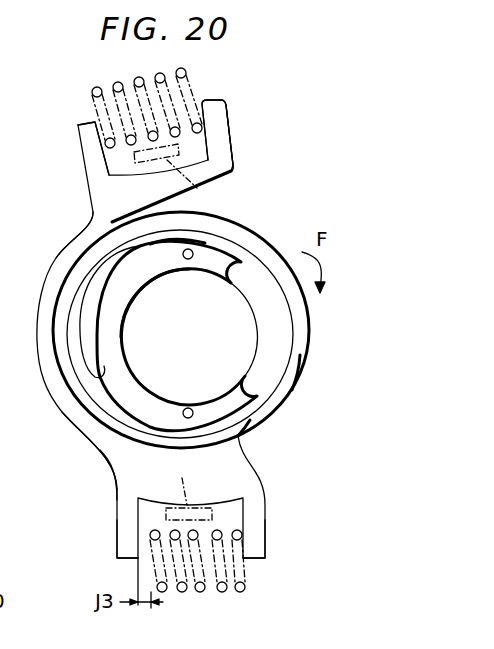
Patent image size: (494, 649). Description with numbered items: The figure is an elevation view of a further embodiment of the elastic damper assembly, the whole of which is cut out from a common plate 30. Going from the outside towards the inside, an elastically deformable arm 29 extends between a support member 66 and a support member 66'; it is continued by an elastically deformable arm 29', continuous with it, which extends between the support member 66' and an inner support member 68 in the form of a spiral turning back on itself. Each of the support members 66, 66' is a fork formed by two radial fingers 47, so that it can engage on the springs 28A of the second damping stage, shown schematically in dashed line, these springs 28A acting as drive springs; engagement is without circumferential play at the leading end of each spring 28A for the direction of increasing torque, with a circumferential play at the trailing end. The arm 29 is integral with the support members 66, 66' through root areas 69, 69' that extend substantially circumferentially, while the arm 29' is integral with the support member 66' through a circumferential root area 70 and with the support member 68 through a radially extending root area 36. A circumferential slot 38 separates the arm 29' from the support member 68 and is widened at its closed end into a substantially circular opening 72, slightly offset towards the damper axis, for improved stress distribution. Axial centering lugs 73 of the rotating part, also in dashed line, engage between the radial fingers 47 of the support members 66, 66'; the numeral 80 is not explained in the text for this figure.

The springs 28A is at (186, 72).
The radial fingers 47 is at (78, 127).
The support member 66 is at (256, 141).
The axial centering lugs 73 is at (198, 189).
The common plate 30 is at (46, 249).
The root area 69 is at (70, 223).
The circumferential slot 38 is at (124, 252).
The support member 68 is at (122, 346).
The substantially circular opening 72 is at (110, 373).
The elastically deformable arm 29' is at (310, 386).
The elastically deformable arm 29 is at (168, 331).
The root area 36 is at (115, 414).
The root area 70 is at (243, 430).
The root area 69' is at (83, 451).
The support member 66' is at (88, 489).
The element 80 is at (67, 645).